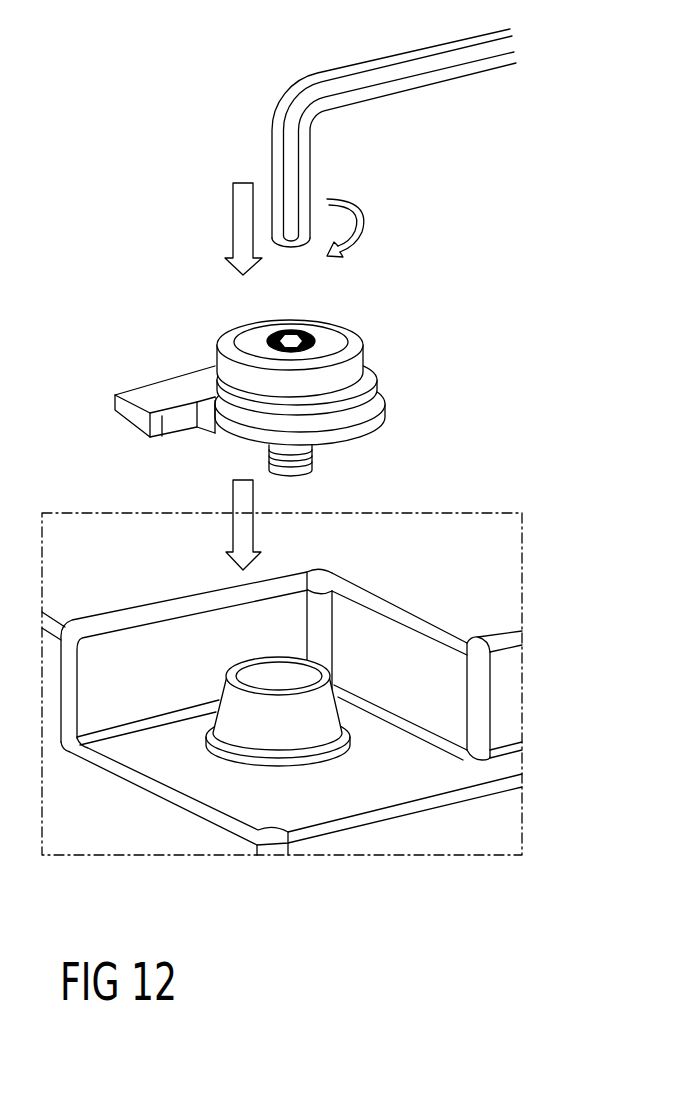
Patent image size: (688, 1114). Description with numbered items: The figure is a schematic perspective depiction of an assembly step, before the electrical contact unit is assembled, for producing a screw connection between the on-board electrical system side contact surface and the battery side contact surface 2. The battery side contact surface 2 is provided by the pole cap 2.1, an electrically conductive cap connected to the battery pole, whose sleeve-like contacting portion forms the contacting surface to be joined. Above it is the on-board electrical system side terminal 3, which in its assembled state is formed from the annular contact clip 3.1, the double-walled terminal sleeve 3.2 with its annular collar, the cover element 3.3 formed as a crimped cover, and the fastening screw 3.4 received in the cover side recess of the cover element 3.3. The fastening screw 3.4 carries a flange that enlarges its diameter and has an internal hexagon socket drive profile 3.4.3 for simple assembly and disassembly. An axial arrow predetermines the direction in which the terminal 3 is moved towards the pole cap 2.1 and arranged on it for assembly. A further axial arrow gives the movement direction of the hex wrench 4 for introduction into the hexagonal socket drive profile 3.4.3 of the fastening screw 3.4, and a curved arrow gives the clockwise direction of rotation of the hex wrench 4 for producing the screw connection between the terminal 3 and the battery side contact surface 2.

The hex wrench 4 is at (297, 125).
The on-board electrical system side terminal 3 is at (302, 381).
The contact clip 3.1 is at (386, 412).
The terminal sleeve 3.2 is at (352, 391).
The cover element 3.3 is at (362, 362).
The fastening screw 3.4 is at (313, 458).
The internal hexagon socket drive profile 3.4.3 is at (300, 337).
The battery side contact surface 2 is at (322, 714).
The pole cap 2.1 is at (322, 712).